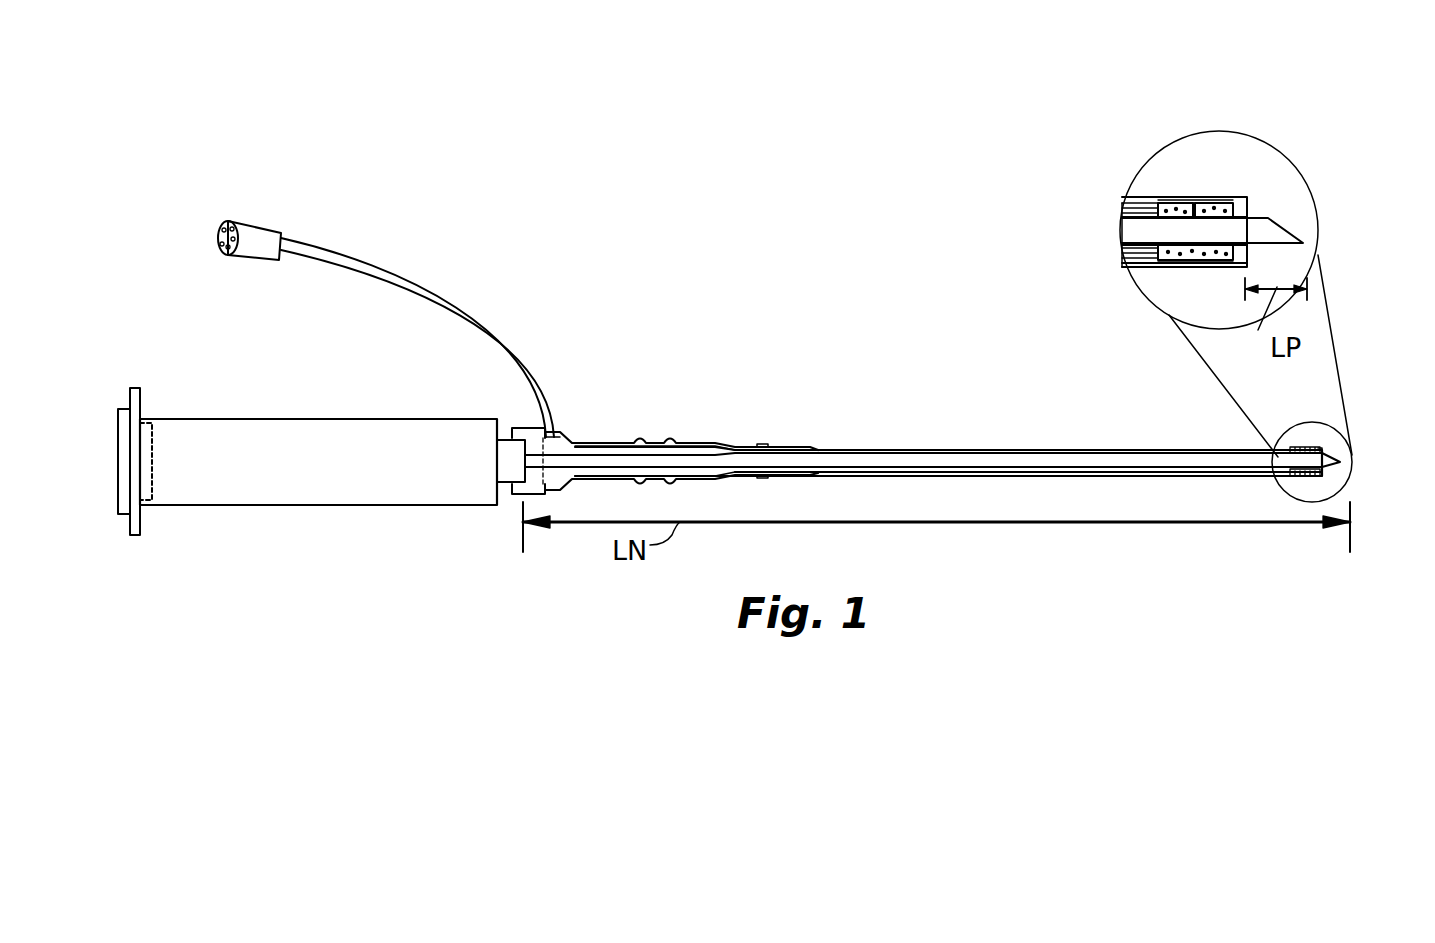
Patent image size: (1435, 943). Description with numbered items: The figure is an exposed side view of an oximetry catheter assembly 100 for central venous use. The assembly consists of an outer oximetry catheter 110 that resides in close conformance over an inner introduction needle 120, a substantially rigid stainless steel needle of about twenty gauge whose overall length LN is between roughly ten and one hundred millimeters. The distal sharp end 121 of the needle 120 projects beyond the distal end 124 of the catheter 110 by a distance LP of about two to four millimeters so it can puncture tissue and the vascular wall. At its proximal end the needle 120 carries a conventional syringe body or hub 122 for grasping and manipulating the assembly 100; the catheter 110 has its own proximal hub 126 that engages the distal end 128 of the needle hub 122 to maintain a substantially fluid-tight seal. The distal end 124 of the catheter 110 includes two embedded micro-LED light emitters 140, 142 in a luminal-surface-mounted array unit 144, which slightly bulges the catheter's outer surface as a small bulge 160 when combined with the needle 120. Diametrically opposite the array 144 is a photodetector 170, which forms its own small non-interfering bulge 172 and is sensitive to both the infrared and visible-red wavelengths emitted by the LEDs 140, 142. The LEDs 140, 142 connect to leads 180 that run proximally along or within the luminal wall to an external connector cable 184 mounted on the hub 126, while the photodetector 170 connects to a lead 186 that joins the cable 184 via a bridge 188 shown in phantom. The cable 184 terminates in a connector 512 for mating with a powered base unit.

The oximetry catheter assembly 100 is at (865, 342).
The outer oximetry catheter 110 is at (920, 447).
The inner introduction needle 120 is at (1120, 462).
The distal/sharp end of needle 121 is at (1356, 460).
The syringe body or hub 122 is at (333, 514).
The distal end of catheter 124 is at (1327, 447).
The proximal hub of catheter 126 is at (607, 429).
The distal end of needle hub 128 is at (502, 437).
The light emitter (LED) 140 is at (1295, 447).
The light emitter (LED) 142 is at (1310, 447).
The LED array unit 144 is at (1207, 178).
The bulge 160 is at (1165, 170).
The photodetector 170 is at (1308, 475).
The bulge 172 is at (1196, 274).
The leads 180 is at (715, 447).
The external connector cable 184 is at (357, 260).
The lead 186 is at (572, 479).
The bridge 188 is at (548, 437).
The connector 512 is at (265, 225).